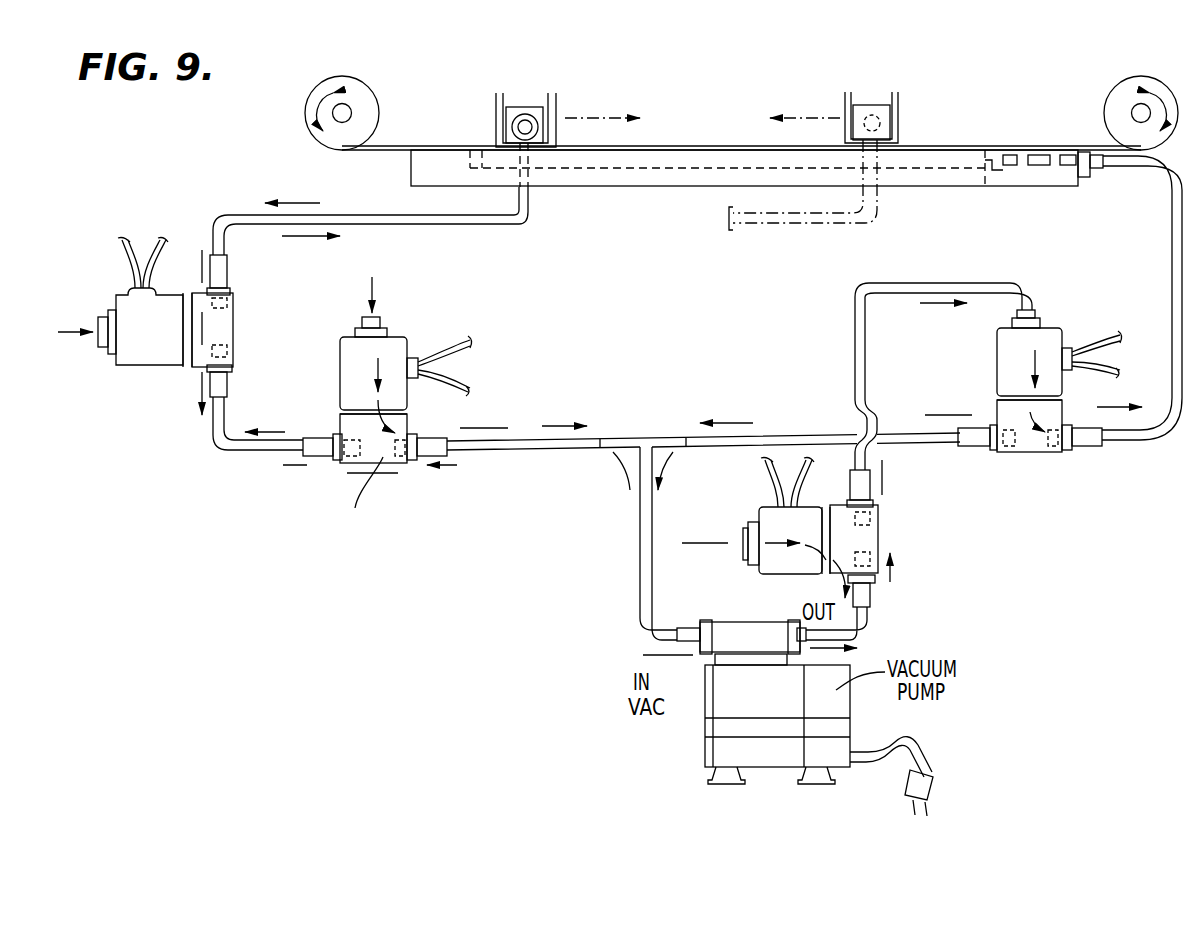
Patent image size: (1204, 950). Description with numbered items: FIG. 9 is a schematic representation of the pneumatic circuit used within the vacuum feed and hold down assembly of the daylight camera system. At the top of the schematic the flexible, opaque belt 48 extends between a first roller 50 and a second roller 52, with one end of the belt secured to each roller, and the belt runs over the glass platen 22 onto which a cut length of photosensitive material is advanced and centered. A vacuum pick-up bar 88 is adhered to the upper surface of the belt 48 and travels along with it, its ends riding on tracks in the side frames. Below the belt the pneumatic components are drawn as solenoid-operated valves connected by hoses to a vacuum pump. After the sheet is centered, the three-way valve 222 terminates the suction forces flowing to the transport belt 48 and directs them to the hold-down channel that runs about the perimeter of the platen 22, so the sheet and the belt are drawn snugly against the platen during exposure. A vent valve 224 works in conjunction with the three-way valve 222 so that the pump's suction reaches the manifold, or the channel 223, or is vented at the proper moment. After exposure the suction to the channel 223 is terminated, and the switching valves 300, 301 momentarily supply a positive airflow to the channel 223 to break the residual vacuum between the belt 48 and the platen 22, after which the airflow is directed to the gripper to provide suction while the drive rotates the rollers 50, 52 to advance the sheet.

The glass platen 22 is at (895, 157).
The belt 48 is at (405, 147).
The first roller 50 is at (362, 100).
The second roller 52 is at (1120, 97).
The vacuum pick-up bar 88 is at (521, 115).
The three-way valve 222 is at (395, 352).
The channel 223 is at (990, 160).
The vent valve 224 is at (155, 352).
The switching valve 300 is at (862, 537).
The switching valve 301 is at (1027, 440).